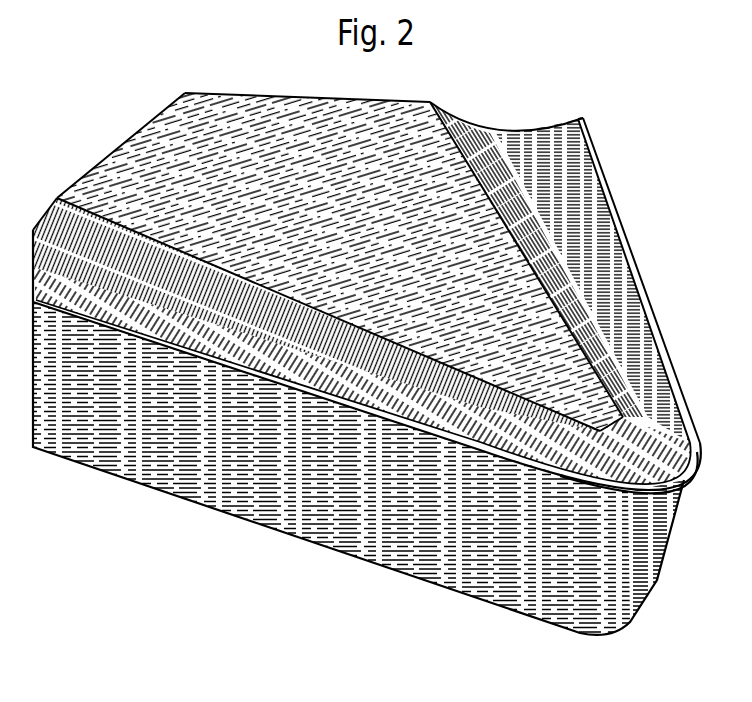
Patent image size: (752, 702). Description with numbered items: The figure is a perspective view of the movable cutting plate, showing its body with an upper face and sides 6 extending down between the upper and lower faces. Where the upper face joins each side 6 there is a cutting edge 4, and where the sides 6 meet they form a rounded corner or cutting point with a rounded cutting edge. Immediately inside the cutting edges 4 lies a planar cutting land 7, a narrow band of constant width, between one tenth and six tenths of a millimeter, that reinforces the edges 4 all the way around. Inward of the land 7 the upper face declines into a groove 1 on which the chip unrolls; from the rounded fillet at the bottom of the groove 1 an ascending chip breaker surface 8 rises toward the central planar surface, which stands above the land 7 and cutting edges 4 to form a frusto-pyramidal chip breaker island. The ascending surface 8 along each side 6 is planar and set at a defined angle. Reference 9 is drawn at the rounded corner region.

The groove 1 is at (575, 235).
The cutting edge 4 is at (140, 340).
The side 6 is at (230, 430).
The cutting land 7 is at (297, 393).
The ascending chip breaker surface 8 is at (390, 373).
The corner nose 9 is at (665, 468).